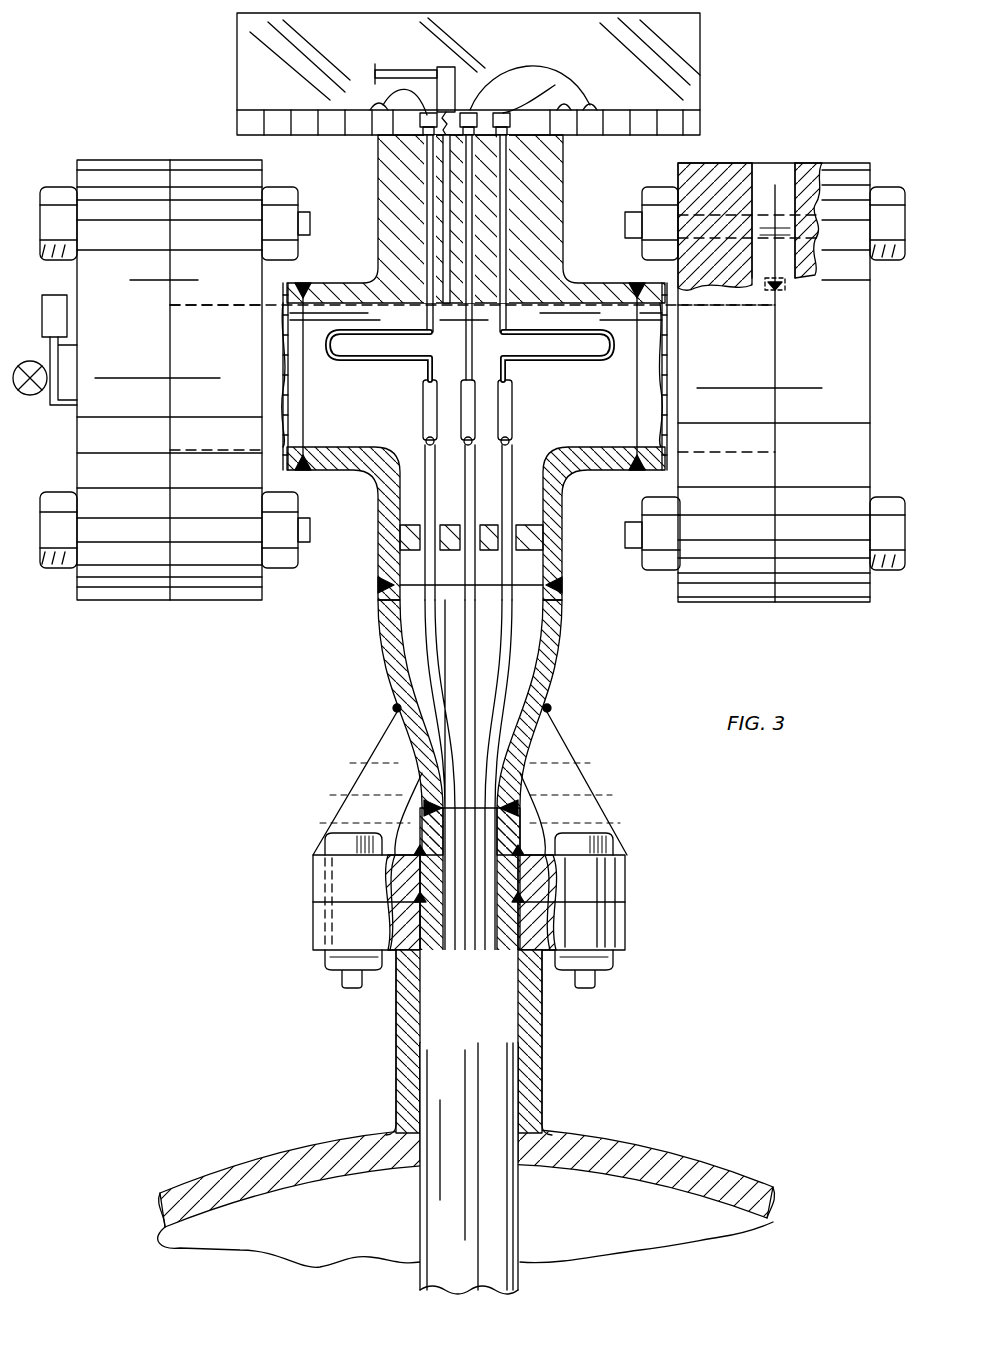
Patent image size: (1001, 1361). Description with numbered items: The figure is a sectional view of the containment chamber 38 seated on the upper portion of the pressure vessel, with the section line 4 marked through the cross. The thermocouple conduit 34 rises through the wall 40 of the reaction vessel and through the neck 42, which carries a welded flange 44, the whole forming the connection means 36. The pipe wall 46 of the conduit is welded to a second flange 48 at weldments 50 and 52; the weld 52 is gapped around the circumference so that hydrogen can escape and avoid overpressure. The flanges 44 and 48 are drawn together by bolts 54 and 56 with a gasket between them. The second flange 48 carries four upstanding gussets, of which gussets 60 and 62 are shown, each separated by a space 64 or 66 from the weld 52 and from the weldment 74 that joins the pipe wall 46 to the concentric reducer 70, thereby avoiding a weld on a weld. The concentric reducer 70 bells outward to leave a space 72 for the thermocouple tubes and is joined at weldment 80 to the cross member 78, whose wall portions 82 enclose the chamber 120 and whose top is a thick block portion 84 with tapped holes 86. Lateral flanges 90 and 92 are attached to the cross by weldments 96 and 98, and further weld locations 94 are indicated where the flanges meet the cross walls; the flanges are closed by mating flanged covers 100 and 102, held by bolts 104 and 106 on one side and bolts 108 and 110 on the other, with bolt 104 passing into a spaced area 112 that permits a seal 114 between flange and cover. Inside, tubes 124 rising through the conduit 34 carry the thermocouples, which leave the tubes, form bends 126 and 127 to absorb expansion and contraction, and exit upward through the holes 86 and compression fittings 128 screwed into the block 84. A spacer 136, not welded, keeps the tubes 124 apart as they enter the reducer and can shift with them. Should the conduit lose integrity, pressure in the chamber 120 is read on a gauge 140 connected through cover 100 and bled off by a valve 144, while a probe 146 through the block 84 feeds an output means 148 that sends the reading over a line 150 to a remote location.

The thermocouple conduit 34 is at (510, 1213).
The connection means 36 is at (290, 985).
The containment chamber 38 is at (212, 660).
The wall 40 is at (588, 1145).
The neck 42 is at (535, 1068).
The flange 44 is at (608, 924).
The wall 46 is at (430, 1010).
The second flange 48 is at (608, 880).
The weldment 50 is at (380, 892).
The weldment 52 is at (385, 876).
The bolt 54 is at (598, 845).
The bolt 56 is at (348, 840).
The gusset 60 is at (550, 738).
The gusset 62 is at (397, 710).
The space 64 is at (548, 822).
The space 66 is at (405, 812).
The concentric reducer 70 is at (552, 653).
The space 72 is at (412, 626).
The weldment 74 is at (535, 796).
The cross member 78 is at (618, 192).
The weldment 80 is at (562, 585).
The wall portions 82 is at (385, 535).
The block portion 84 is at (378, 193).
The holes 86 is at (510, 195).
The flange 90 is at (200, 168).
The second flange 92 is at (748, 595).
The weld 94 is at (287, 287).
The weldment 96 is at (637, 305).
The weldment 98 is at (470, 363).
The mating flanged cover 100 is at (120, 168).
The mating flanged cover 102 is at (805, 168).
The bolt 104 is at (715, 210).
The bolt 106 is at (875, 520).
The bolt 108 is at (50, 190).
The bolt 110 is at (55, 498).
The spaced area 112 is at (783, 170).
The seal 114 is at (778, 292).
The chamber 120 is at (396, 385).
The tubes 124 is at (425, 456).
The bend 126 is at (372, 363).
The bend 127 is at (566, 322).
The compression fittings 128 is at (555, 85).
The spacer 136 is at (450, 530).
The gauge 140 is at (55, 312).
The valve 144 is at (42, 378).
The probe 146 is at (448, 150).
The output means 148 is at (446, 67).
The line 150 is at (378, 70).
The section line 4- 4 is at (503, 97).